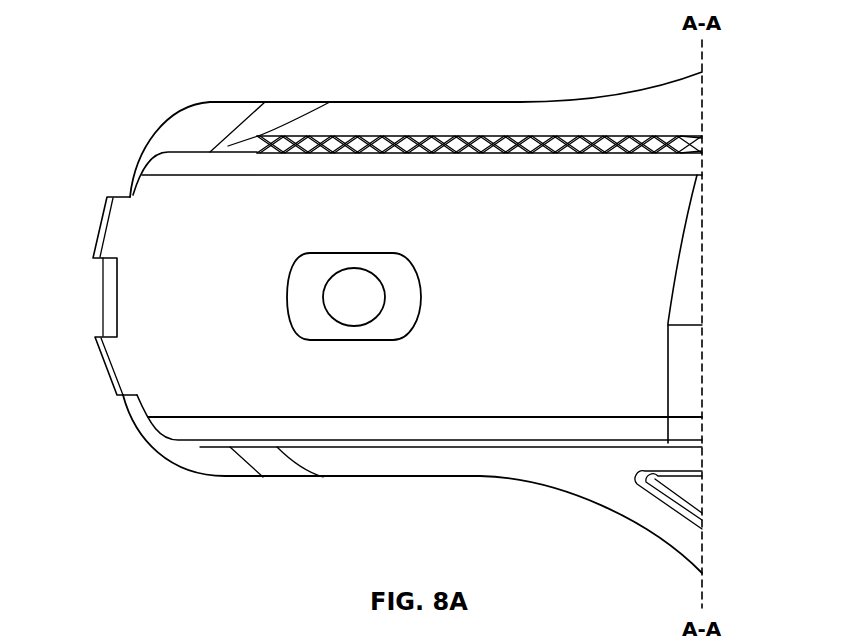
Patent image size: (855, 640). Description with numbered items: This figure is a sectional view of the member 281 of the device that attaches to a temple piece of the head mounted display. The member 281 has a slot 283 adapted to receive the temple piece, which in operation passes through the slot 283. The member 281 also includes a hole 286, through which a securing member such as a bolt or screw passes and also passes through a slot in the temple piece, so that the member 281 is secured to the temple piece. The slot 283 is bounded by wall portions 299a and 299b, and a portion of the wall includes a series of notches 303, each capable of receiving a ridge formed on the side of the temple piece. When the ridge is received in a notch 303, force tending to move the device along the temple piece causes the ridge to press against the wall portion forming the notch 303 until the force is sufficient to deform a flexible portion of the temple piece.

The member 281 is at (378, 69).
The slot 283 is at (137, 289).
The hole 286 is at (386, 299).
The upper channel 299a is at (257, 153).
The lower channel 299b is at (448, 442).
The notches 303 is at (465, 160).